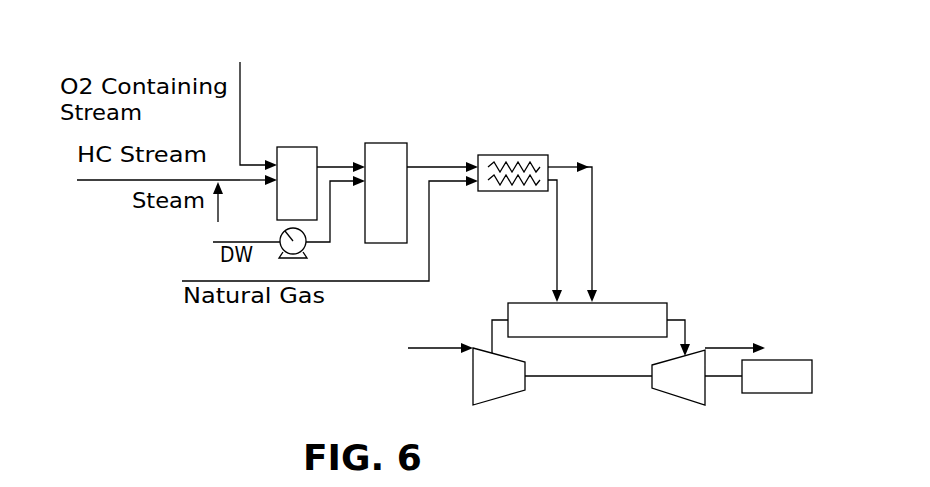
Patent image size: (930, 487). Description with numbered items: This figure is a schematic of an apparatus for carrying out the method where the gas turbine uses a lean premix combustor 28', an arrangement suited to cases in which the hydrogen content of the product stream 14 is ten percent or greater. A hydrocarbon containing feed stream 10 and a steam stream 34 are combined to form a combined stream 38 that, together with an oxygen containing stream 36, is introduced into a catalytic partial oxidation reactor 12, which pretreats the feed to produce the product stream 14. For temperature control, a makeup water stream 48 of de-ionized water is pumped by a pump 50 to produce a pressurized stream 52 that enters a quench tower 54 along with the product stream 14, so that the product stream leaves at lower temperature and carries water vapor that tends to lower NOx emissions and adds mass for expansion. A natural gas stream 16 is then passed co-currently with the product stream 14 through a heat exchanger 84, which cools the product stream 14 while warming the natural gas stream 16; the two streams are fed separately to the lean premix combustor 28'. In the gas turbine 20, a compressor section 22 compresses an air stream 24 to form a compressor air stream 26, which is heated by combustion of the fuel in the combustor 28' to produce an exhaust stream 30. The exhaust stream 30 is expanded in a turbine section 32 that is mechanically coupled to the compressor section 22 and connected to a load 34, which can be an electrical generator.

The hydrocarbon containing feed stream 10 is at (107, 182).
The catalytic partial oxidation reactor 12 is at (292, 147).
The product stream 14 is at (336, 165).
The natural gas stream 16 is at (342, 281).
The gas turbine 20 is at (688, 264).
The compressor section 22 is at (510, 381).
The air stream 24 is at (433, 352).
The compressor air stream 26 is at (492, 312).
The lean premix combustor 28' is at (587, 297).
The exhaust stream 30 is at (685, 322).
The turbine section 32 is at (672, 378).
The steam stream / load 34 is at (216, 202).
The oxygen containing stream 36 is at (240, 79).
The combined stream 38 is at (242, 180).
The makeup water stream 48 is at (212, 245).
The pump 50 is at (287, 235).
The pressurized stream 52 is at (350, 220).
The quench tower 54 is at (385, 143).
The heat exchanger 84 is at (510, 155).